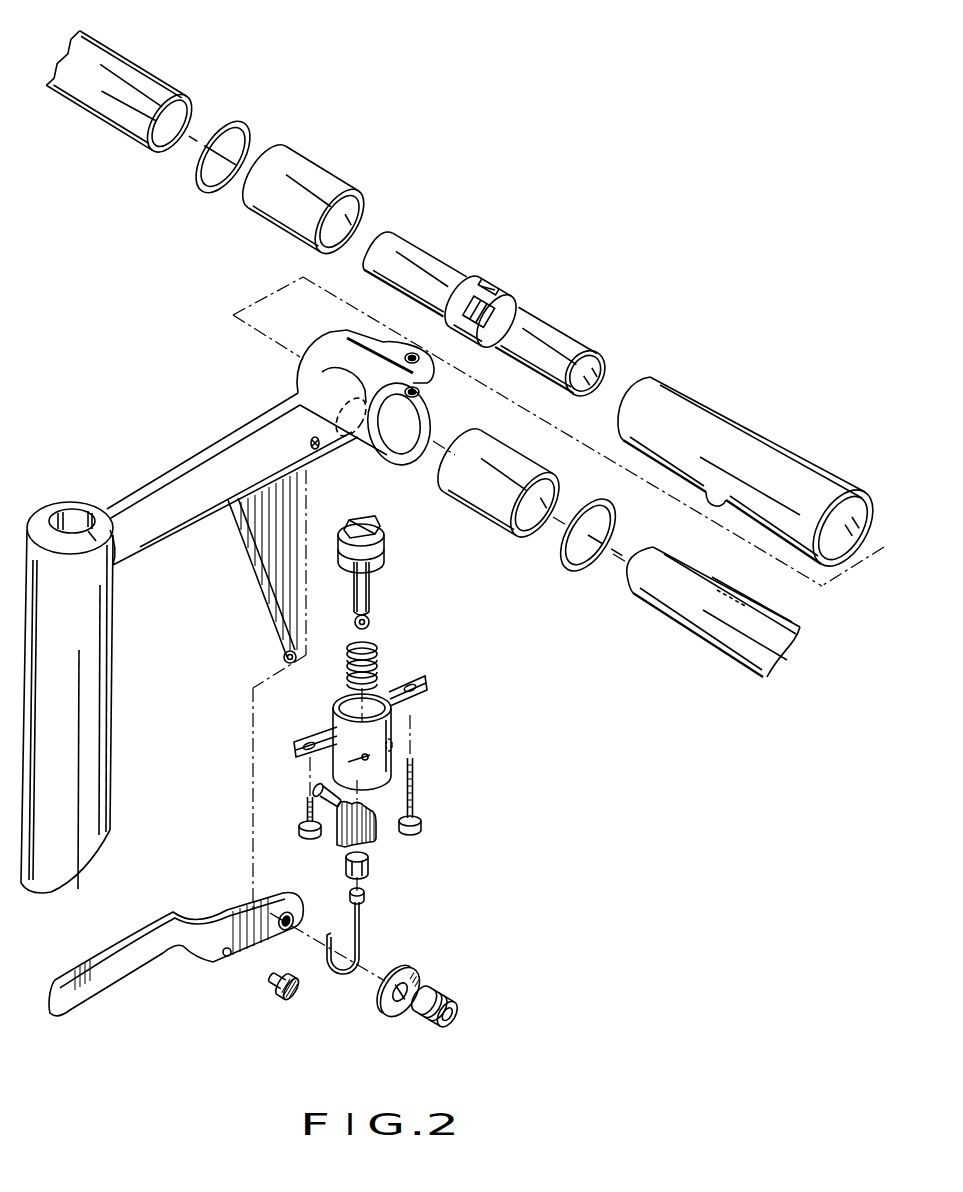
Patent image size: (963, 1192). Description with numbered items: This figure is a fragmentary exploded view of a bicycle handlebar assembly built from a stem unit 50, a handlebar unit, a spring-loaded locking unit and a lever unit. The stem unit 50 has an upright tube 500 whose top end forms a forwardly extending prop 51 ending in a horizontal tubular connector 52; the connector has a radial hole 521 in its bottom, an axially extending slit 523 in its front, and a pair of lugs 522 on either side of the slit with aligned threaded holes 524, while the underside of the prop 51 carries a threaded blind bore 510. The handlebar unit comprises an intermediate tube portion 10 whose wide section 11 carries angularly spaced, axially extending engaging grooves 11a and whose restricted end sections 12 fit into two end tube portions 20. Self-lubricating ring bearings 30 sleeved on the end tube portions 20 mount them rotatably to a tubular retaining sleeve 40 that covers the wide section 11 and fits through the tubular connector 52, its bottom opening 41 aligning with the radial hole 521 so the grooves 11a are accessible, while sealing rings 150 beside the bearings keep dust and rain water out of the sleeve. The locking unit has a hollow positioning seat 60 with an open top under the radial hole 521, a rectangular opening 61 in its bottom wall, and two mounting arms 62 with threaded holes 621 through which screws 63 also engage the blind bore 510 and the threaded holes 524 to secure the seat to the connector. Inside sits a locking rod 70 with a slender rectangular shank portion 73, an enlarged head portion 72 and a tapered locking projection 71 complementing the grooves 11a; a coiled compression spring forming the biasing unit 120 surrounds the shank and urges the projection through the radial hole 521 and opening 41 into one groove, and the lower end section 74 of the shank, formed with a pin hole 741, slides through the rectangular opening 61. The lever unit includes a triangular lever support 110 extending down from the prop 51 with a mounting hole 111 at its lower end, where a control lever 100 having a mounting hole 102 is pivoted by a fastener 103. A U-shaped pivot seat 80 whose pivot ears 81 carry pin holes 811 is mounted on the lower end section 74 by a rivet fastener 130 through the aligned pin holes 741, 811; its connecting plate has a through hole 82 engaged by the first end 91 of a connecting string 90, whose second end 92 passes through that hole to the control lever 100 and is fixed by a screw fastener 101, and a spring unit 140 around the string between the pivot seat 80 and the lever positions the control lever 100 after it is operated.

The intermediate tube portion 10 is at (510, 307).
The wide section 11 is at (480, 312).
The engaging grooves 11a is at (482, 303).
The restricted end sections 12 is at (485, 314).
The end tube portions 20 is at (168, 83).
The ring bearings 30 is at (340, 180).
The tubular retaining sleeve 40 is at (751, 446).
The opening 41 is at (716, 499).
The stem unit 50 is at (106, 697).
The upright tube 500 is at (97, 713).
The prop 51 is at (178, 480).
The tubular connector 52 is at (372, 404).
The threaded blind bore 510 is at (320, 452).
The radial hole 521 is at (399, 424).
The lugs 522 is at (380, 355).
The slit 523 is at (412, 392).
The threaded holes 524 is at (412, 358).
The positioning seat 60 is at (371, 740).
The rectangular opening 61 is at (397, 745).
The mounting arms 62 is at (374, 731).
The threaded hole 621 is at (417, 696).
The screws 63 is at (306, 806).
The locking rod 70 is at (377, 591).
The tapered locking projection 71 is at (380, 527).
The enlarged head portion 72 is at (380, 560).
The slender shank portion 73 is at (371, 592).
The lower end section 74 is at (396, 638).
The pin hole 741 is at (366, 627).
The pivot seat 80 is at (412, 821).
The pivot ears 81 is at (389, 821).
The pin hole 811 is at (377, 823).
The through hole 82 is at (371, 853).
The connecting string 90 is at (361, 981).
The first end 91 is at (374, 905).
The second end 92 is at (329, 942).
The control lever 100 is at (176, 946).
The screw fastener 101 is at (440, 999).
The mounting hole 102 is at (226, 957).
The fastener 103 is at (271, 1000).
The lever support 110 is at (246, 576).
The mounting hole 111 is at (283, 658).
The biasing unit 120 is at (346, 652).
The fastener 130 is at (330, 814).
The spring unit 140 is at (369, 878).
The sealing rings 150 is at (329, 108).